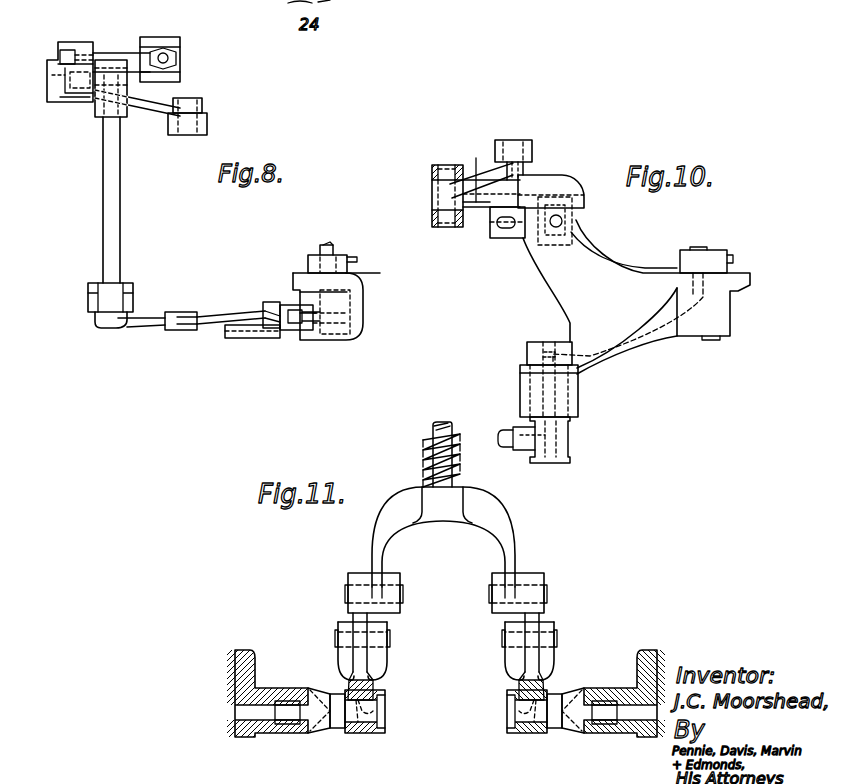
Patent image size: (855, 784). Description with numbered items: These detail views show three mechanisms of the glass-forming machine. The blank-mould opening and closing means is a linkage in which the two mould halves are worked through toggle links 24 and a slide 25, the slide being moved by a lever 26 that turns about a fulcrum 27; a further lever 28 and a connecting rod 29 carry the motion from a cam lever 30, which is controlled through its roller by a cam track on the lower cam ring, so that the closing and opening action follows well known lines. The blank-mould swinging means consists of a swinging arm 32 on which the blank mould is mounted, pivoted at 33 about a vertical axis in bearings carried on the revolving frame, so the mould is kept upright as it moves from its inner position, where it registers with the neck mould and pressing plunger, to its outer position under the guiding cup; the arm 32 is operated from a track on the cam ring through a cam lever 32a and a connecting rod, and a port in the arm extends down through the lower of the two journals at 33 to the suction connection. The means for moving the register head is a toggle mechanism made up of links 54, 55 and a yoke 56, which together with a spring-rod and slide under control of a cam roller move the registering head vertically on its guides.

In FIG. 8, the toggle links 24 is at (298, 328).
In FIG. 8, the slide 25 is at (272, 329).
In FIG. 8, the lever 26 is at (152, 329).
In FIG. 8, the fulcrum 27 is at (121, 210).
In FIG. 8, the lever 28 is at (90, 44).
In FIG. 8, the connecting rod 29 is at (123, 52).
In FIG. 8, the cam lever 30 is at (159, 106).
In FIG. 8, the swinging arm 32 is at (300, 276).
In FIG. 10, the swinging arm 32 is at (608, 261).
In FIG. 10, the cam lever 32a is at (470, 202).
In FIG. 10, the pivot 33 is at (548, 183).
In FIG. 11, the link 54 is at (377, 732).
In FIG. 11, the link 55 is at (383, 663).
In FIG. 11, the yoke 56 is at (398, 563).